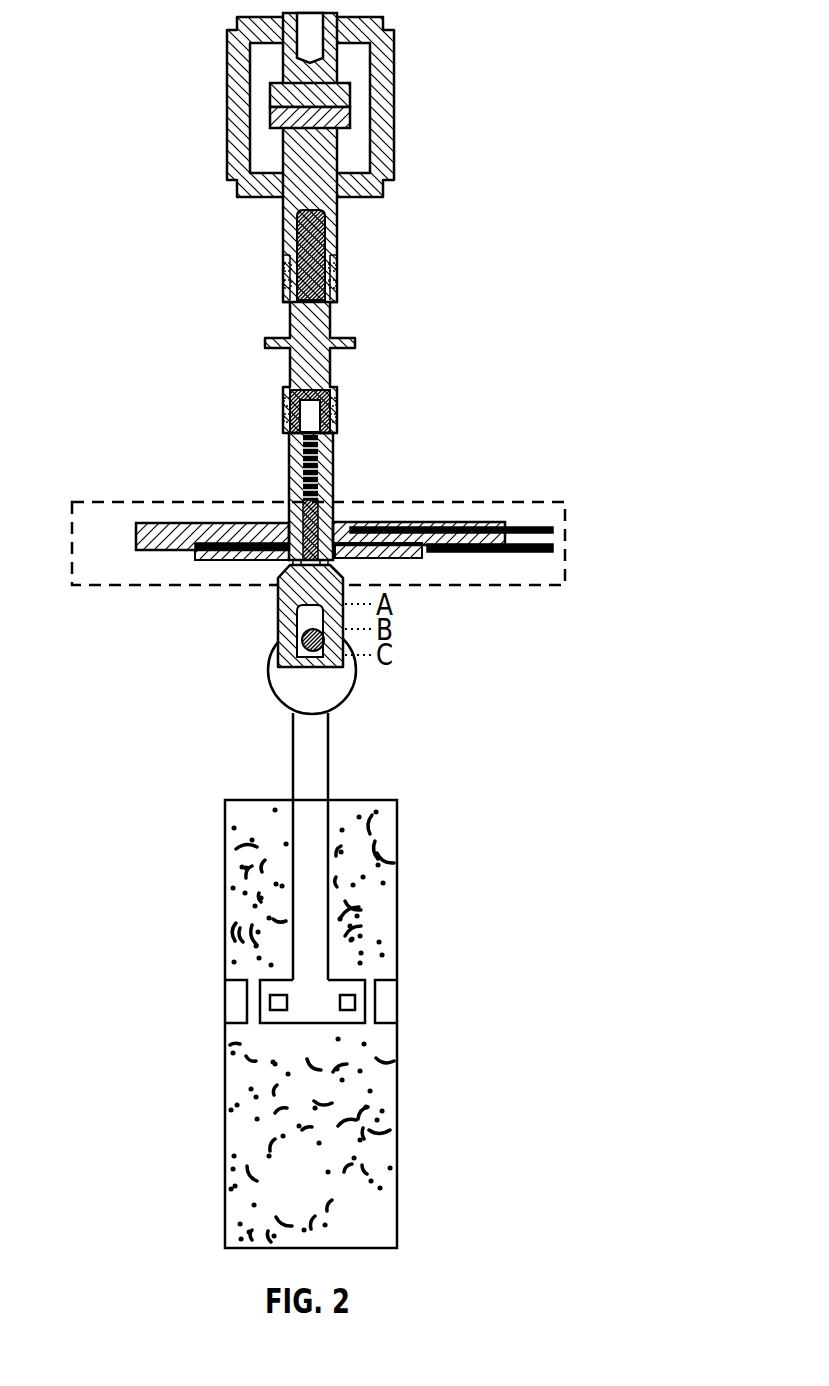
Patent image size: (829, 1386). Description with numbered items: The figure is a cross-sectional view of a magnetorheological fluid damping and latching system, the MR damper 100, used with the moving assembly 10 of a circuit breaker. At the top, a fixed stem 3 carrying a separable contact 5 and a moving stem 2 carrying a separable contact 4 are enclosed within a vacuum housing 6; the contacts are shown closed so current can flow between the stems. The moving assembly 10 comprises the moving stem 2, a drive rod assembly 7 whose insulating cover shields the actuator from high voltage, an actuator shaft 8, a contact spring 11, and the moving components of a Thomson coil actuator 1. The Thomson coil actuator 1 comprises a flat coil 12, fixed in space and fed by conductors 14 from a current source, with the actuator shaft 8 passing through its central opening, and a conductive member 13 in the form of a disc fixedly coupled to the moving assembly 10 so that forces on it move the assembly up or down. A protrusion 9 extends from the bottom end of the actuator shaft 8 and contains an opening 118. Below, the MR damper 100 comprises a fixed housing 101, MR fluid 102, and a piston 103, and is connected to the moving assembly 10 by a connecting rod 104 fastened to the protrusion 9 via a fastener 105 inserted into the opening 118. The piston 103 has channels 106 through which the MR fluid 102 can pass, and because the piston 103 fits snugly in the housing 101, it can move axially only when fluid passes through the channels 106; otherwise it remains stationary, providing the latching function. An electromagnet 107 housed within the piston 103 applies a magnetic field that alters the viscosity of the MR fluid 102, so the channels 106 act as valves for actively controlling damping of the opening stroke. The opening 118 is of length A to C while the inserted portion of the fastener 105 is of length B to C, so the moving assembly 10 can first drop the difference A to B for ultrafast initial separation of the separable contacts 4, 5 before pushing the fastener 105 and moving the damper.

The Thomson coil actuator 1 is at (463, 502).
The moving stem 2 is at (283, 210).
The fixed stem 3 is at (280, 58).
The separable contact 4 is at (270, 118).
The separable contact 5 is at (270, 93).
The vacuum housing 6 is at (394, 92).
The drive rod assembly 7 is at (290, 325).
The actuator shaft 8 is at (289, 473).
The protrusion 9 is at (345, 577).
The moving assembly 10 is at (410, 250).
The contact spring 11 is at (318, 470).
The coil 12 is at (205, 525).
The conductive member 13 is at (233, 557).
The conductors 14 is at (553, 548).
The MR damper 100 is at (155, 780).
The housing 101 is at (397, 830).
The MR fluid 102 is at (385, 1145).
The piston 103 is at (385, 990).
The connecting rod 104 is at (322, 762).
The fastener 105 is at (312, 648).
The channels 106 is at (370, 975).
The electromagnet 107 is at (357, 1003).
The opening 118 is at (313, 613).